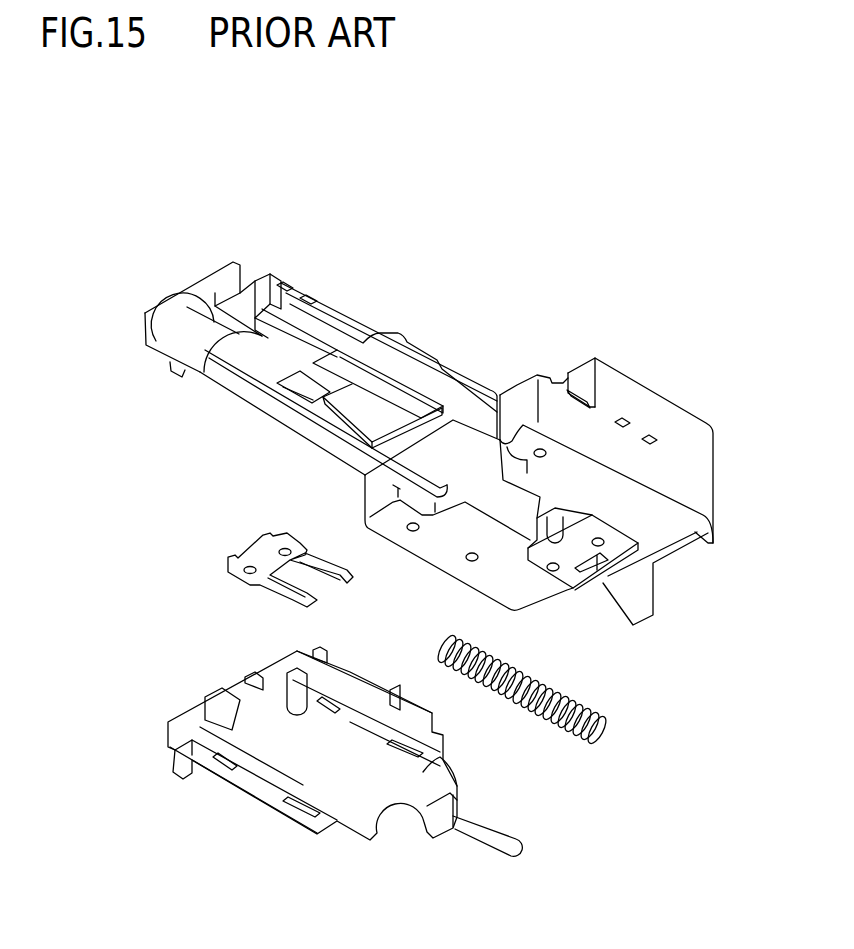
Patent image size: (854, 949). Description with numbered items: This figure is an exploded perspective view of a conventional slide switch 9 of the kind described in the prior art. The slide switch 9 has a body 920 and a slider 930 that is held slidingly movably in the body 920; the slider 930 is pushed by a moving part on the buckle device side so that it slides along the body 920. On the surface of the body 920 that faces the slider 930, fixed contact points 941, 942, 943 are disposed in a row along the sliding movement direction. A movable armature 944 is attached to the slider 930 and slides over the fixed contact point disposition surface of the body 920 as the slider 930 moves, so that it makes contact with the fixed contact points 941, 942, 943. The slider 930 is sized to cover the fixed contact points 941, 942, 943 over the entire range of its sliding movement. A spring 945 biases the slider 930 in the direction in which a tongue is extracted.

The slide switch 9 is at (640, 212).
The body 920 is at (272, 272).
The slider 930 is at (380, 840).
The fixed contact point 941 is at (375, 379).
The fixed contact point 942 is at (332, 412).
The fixed contact point 943 is at (307, 386).
The movable armature 944 is at (227, 550).
The spring 945 is at (600, 753).